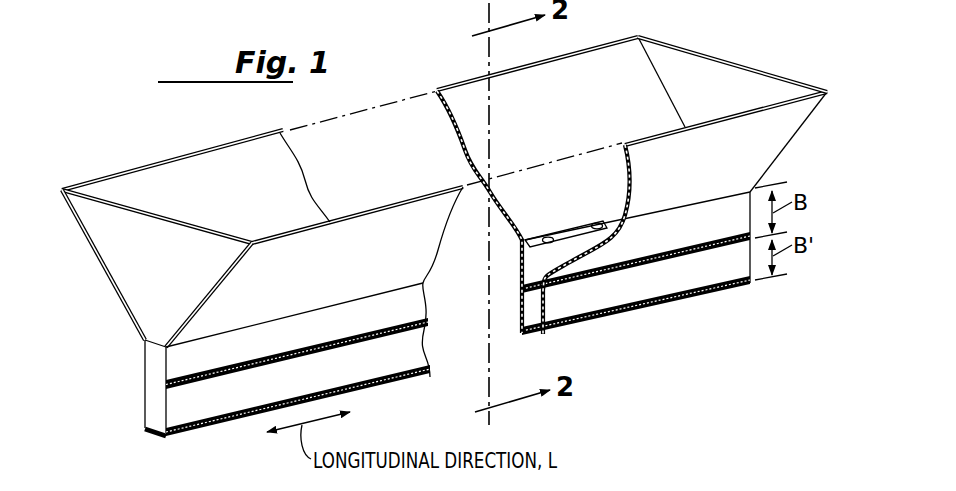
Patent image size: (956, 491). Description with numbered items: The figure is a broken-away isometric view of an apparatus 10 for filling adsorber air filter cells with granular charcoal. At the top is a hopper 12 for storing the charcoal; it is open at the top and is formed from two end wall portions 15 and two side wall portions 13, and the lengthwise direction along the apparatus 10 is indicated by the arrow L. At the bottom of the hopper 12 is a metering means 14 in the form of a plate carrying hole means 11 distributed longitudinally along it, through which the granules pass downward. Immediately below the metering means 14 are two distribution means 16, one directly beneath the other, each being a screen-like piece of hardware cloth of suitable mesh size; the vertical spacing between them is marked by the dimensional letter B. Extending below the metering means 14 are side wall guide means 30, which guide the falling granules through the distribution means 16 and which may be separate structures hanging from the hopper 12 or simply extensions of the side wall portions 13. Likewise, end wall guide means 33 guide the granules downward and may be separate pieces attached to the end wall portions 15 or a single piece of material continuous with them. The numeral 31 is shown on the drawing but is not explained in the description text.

The apparatus 10 is at (433, 246).
The hole means 11 is at (547, 236).
The hopper 12 is at (690, 80).
The side wall portions 13 is at (217, 167).
The metering means 14 is at (585, 188).
The end wall portions 15 is at (138, 255).
The distribution means 16 is at (531, 293).
The side wall guide means 30 is at (185, 406).
The lower bead 31 is at (220, 423).
The end wall guide means 33 is at (157, 363).